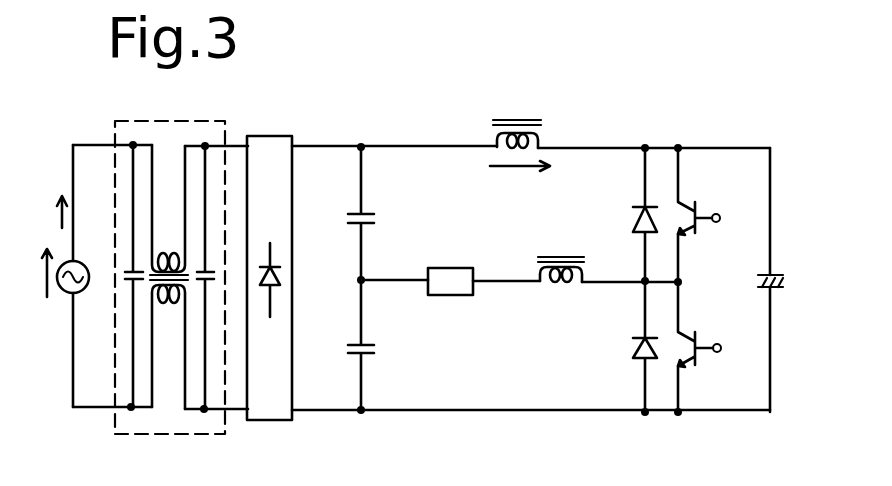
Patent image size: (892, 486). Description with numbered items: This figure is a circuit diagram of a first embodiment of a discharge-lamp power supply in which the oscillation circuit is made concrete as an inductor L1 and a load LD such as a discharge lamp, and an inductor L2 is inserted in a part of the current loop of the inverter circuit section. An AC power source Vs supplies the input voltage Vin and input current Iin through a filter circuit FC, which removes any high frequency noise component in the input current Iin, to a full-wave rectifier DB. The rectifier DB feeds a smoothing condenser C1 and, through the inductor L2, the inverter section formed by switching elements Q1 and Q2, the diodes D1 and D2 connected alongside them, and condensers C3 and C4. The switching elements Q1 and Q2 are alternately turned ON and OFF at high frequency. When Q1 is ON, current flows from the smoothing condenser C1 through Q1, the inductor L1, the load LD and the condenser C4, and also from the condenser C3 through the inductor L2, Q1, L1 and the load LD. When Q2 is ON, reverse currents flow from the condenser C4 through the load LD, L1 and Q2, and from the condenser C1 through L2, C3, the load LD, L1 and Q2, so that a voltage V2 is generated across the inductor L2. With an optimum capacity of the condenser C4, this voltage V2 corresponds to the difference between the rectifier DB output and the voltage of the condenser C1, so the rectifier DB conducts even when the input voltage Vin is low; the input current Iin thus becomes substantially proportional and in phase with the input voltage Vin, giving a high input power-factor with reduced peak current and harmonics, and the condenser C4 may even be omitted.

The AC power source Vs is at (87, 295).
The input voltage Vin is at (28, 273).
The input current Iin is at (59, 193).
The filter circuit FC is at (173, 437).
The full-wave rectifier DB is at (270, 259).
The condenser C3 is at (383, 213).
The condenser C4 is at (385, 345).
The load LD is at (455, 295).
The inductor L1 is at (561, 291).
The inductor L2 is at (517, 117).
The voltage V2 is at (520, 182).
The diode D1 is at (627, 214).
The diode D2 is at (627, 346).
The switching element Q1 is at (710, 215).
The switching element Q2 is at (709, 347).
The smoothing condenser C1 is at (790, 264).